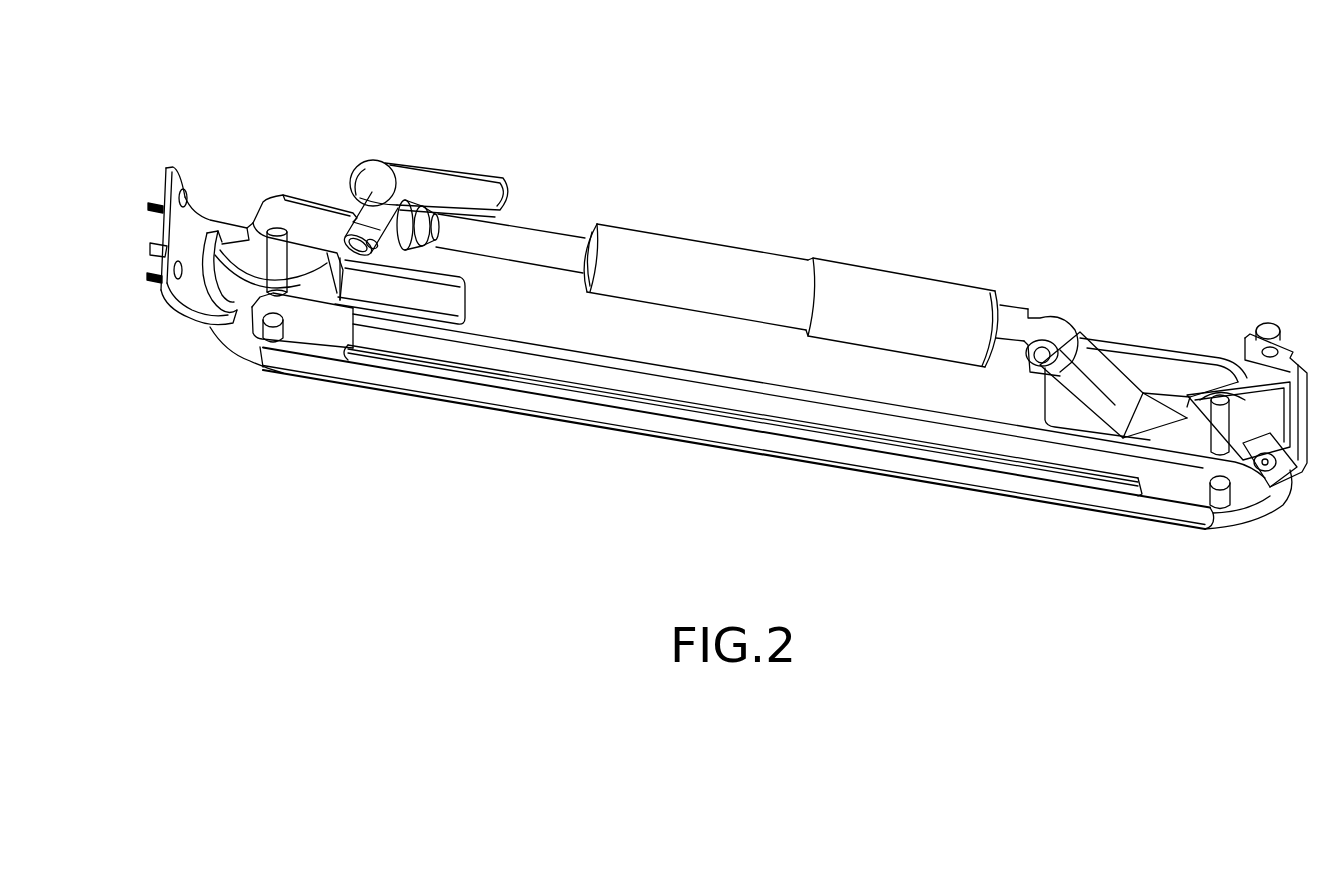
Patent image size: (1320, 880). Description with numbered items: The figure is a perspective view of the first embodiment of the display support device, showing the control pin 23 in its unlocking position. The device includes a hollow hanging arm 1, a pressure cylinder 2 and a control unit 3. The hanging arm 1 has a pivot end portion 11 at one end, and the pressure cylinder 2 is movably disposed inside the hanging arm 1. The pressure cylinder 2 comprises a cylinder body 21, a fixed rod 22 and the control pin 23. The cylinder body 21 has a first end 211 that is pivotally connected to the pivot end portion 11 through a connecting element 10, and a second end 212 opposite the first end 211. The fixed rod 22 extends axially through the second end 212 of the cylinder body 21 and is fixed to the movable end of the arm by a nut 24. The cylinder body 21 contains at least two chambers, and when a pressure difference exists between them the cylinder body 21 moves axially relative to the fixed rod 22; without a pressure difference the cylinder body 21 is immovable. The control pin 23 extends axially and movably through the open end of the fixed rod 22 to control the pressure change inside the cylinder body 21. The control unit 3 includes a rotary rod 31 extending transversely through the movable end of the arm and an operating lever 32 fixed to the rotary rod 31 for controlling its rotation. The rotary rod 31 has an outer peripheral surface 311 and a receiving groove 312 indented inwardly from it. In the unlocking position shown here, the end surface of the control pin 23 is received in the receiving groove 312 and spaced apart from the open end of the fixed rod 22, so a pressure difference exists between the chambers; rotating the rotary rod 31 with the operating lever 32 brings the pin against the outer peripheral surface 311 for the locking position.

The hollow hanging arm 1 is at (660, 440).
The pivot end portion 11 is at (1170, 487).
The pressure cylinder 2 is at (709, 292).
The cylinder body 21 is at (760, 266).
The first end 211 is at (1040, 320).
The second end 212 is at (606, 233).
The fixed rod 22 is at (433, 214).
The control pin 23 is at (383, 205).
The nut 24 is at (424, 250).
The control unit 3 is at (327, 245).
The rotary rod 31 is at (334, 293).
The outer peripheral surface 311 is at (352, 268).
The receiving groove 312 is at (378, 248).
The operating lever 32 is at (492, 183).
The connecting element 10 is at (1113, 383).